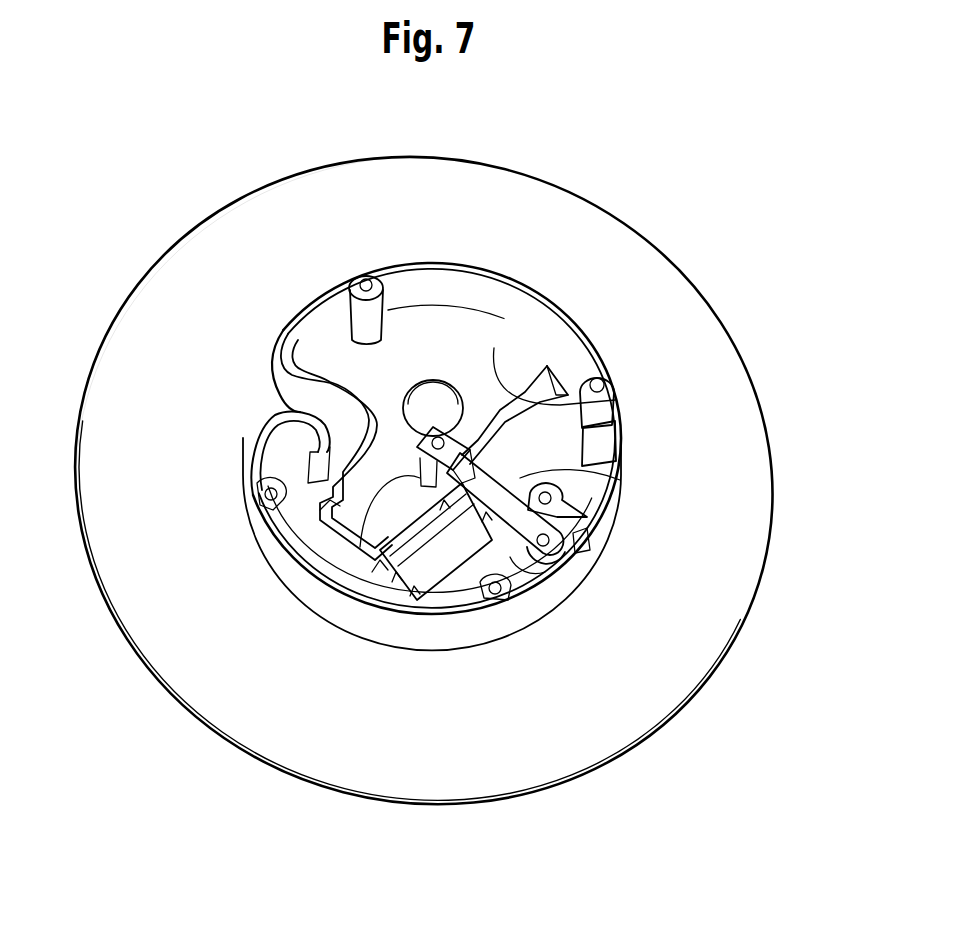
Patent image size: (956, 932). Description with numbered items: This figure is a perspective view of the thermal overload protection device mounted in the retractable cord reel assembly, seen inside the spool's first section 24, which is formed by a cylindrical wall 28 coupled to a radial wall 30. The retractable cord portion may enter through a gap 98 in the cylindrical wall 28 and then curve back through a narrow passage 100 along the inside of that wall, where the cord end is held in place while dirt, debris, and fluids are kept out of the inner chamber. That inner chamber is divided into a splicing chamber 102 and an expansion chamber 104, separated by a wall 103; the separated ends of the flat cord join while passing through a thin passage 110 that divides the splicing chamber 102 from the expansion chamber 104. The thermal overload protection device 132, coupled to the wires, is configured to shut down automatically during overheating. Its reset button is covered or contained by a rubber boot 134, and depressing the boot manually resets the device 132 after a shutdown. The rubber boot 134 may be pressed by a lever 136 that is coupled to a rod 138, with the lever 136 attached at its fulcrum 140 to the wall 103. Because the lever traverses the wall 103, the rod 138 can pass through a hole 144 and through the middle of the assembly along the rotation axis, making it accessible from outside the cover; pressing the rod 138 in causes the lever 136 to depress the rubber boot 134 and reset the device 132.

The first section 24 is at (233, 199).
The cylindrical wall 28 is at (443, 262).
The radial wall 30 is at (162, 247).
The gap 98 is at (320, 397).
The narrow passage 100 is at (355, 540).
The splicing chamber 102 is at (597, 472).
The wall 103 is at (500, 370).
The expansion chamber 104 is at (436, 338).
The thin passage 110 is at (625, 408).
The thermal overload protection device 132 is at (568, 552).
The rubber boot 134 is at (553, 555).
The lever 136 is at (548, 478).
The rod 138 is at (375, 535).
The fulcrum 140 is at (478, 425).
The hole 144 is at (395, 525).